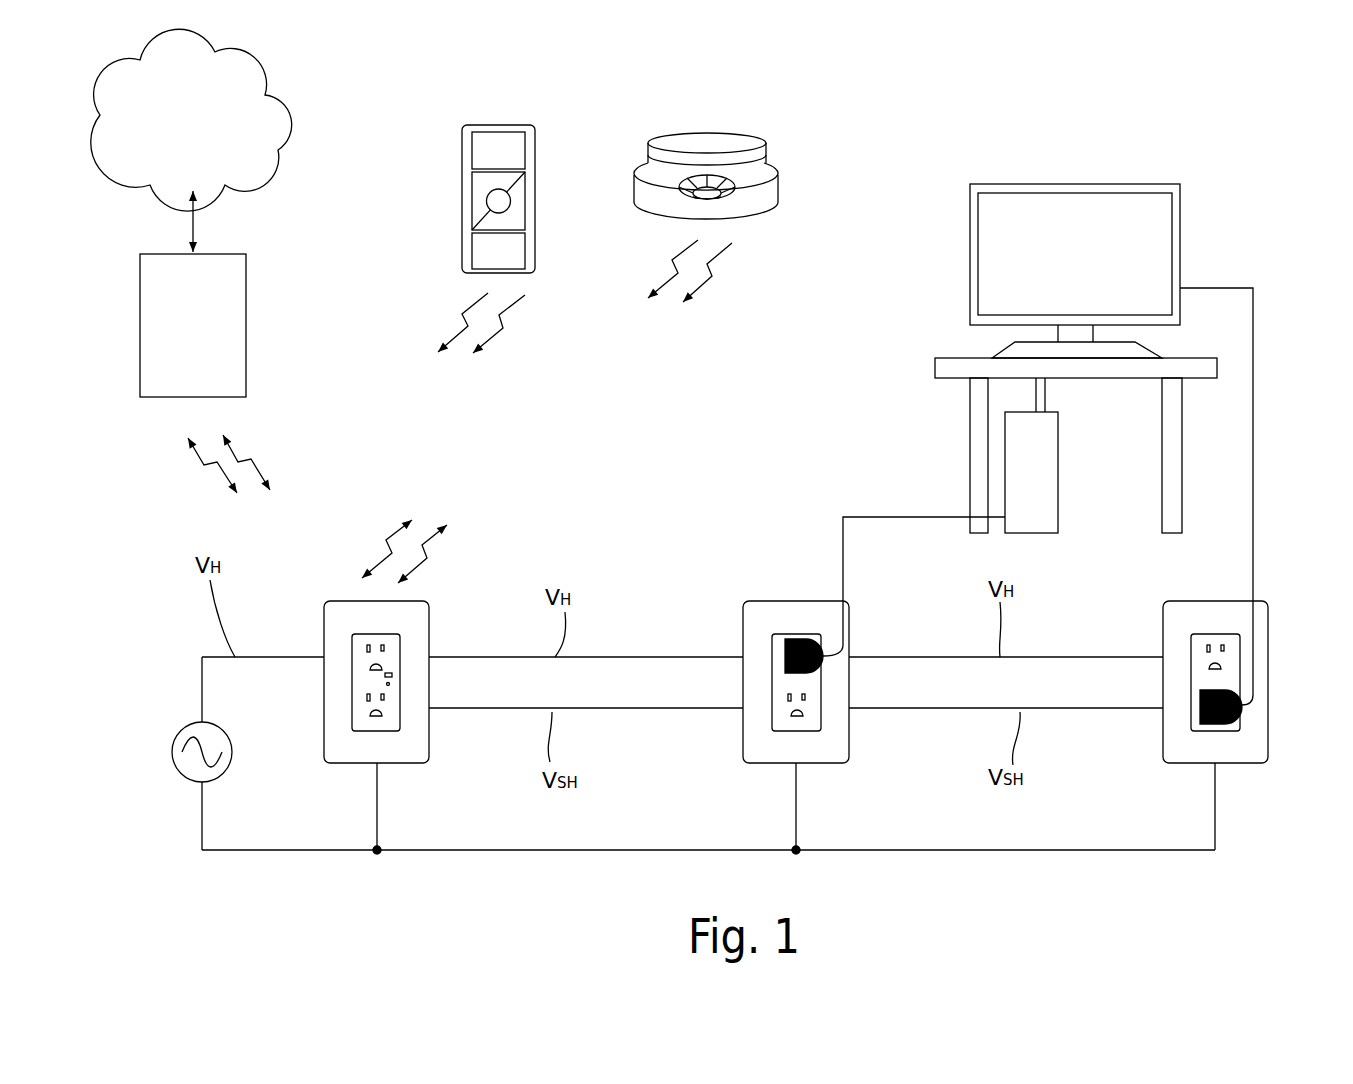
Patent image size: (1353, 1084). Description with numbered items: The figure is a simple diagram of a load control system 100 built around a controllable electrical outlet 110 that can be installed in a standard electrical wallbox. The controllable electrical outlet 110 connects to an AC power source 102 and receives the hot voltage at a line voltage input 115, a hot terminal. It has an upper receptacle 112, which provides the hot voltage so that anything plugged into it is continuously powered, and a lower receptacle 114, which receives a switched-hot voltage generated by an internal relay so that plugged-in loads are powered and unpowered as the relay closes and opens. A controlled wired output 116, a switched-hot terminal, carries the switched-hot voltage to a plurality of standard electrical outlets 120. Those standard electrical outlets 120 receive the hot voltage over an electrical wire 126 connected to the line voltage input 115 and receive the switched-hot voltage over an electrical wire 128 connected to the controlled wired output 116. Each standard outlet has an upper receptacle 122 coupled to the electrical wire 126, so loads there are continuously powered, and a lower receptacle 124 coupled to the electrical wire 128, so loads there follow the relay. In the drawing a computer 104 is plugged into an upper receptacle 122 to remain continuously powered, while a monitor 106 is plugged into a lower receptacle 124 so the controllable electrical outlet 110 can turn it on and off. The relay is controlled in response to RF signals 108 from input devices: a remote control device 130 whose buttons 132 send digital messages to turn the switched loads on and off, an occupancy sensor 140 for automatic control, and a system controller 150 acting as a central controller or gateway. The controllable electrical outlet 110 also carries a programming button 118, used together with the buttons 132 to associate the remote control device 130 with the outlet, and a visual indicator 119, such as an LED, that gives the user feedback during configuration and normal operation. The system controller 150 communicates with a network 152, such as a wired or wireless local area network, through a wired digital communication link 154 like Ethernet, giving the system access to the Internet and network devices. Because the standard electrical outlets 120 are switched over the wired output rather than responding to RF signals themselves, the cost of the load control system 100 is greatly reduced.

The load control system 100 is at (1200, 146).
The AC power source 102 is at (213, 742).
The computer 104 is at (1040, 477).
The monitor 106 is at (997, 270).
The RF signals 108 is at (645, 272).
The controllable electrical outlet 110 is at (368, 697).
The upper receptacle 112 is at (367, 662).
The lower receptacle 114 is at (360, 712).
The line voltage input 115 is at (323, 655).
The controlled wired output 116 is at (430, 713).
The programming button 118 is at (389, 672).
The visual indicator 119 is at (390, 688).
The standard electrical outlets 120 is at (752, 732).
The upper receptacle 122 is at (758, 645).
The lower receptacle 124 is at (810, 742).
The electrical wire 126 is at (635, 657).
The electrical wire 128 is at (630, 712).
The remote control device 130 is at (535, 132).
The buttons 132 is at (487, 148).
The occupancy sensor 140 is at (717, 140).
The system controller 150 is at (220, 360).
The network 152 is at (191, 120).
The wired digital communication link 154 is at (193, 218).